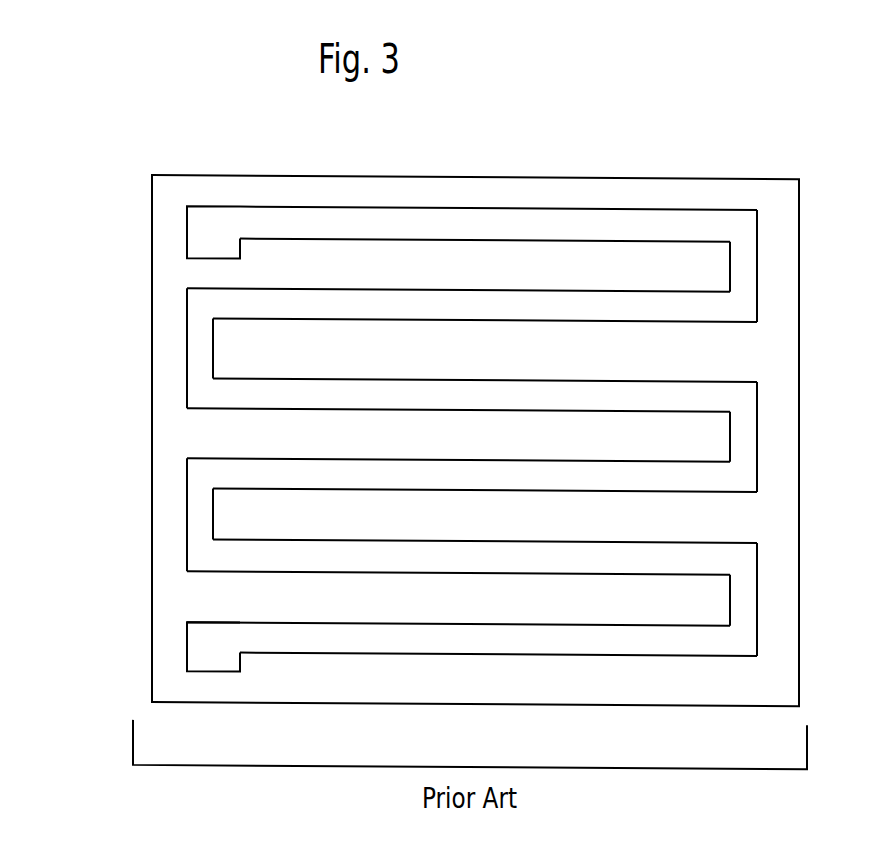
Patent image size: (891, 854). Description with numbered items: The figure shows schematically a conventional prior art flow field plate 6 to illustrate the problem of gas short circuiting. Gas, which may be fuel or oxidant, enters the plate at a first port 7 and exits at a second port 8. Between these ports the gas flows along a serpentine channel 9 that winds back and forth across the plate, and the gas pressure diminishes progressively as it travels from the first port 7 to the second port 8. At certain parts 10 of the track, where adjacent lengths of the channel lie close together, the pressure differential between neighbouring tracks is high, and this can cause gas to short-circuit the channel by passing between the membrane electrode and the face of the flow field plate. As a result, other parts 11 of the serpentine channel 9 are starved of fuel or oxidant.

The flow field plate 6 is at (500, 178).
The first port 7 is at (213, 225).
The second port 8 is at (212, 652).
The serpentine channel 9 is at (632, 232).
The parts of the track 10 is at (743, 305).
The other parts 11 is at (205, 347).